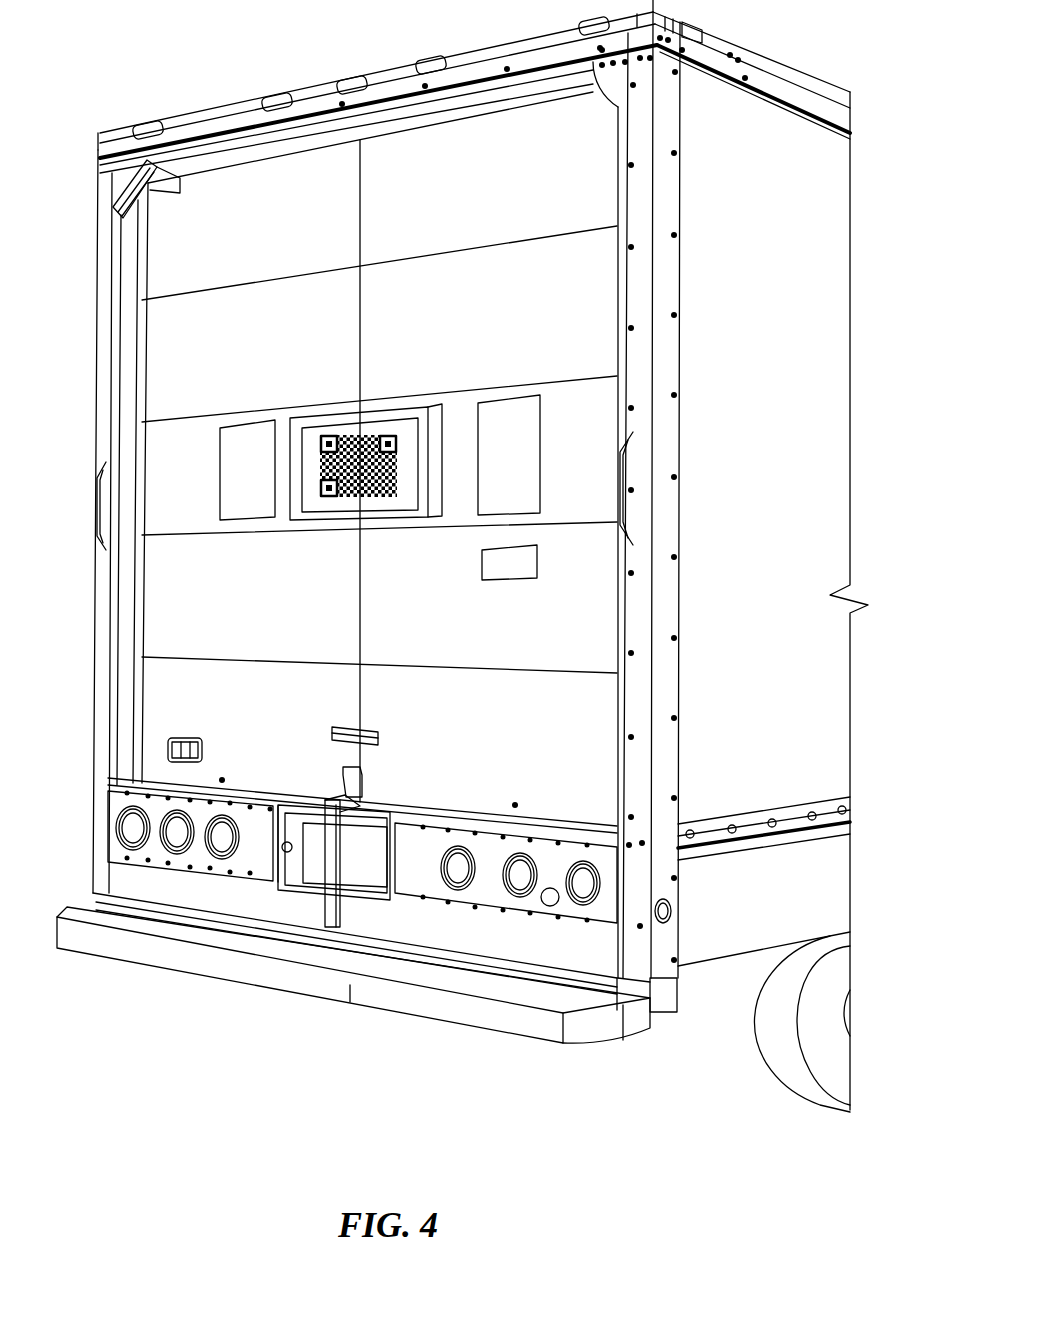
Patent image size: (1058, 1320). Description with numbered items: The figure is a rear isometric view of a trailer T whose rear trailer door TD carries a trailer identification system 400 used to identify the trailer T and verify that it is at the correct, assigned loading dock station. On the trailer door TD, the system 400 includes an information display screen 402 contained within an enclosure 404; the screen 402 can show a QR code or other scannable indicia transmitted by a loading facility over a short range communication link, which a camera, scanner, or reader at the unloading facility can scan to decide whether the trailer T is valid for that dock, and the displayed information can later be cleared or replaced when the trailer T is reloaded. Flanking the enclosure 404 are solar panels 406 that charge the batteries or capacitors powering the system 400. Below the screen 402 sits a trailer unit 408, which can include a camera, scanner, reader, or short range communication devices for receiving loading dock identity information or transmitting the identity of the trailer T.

The trailer identification system 400 is at (396, 319).
The information display screen 402 is at (357, 427).
The enclosure 404 is at (427, 427).
The solar panel 406 is at (237, 472).
The trailer unit 408 is at (510, 580).
The trailer door TD is at (600, 199).
The trailer T is at (830, 349).